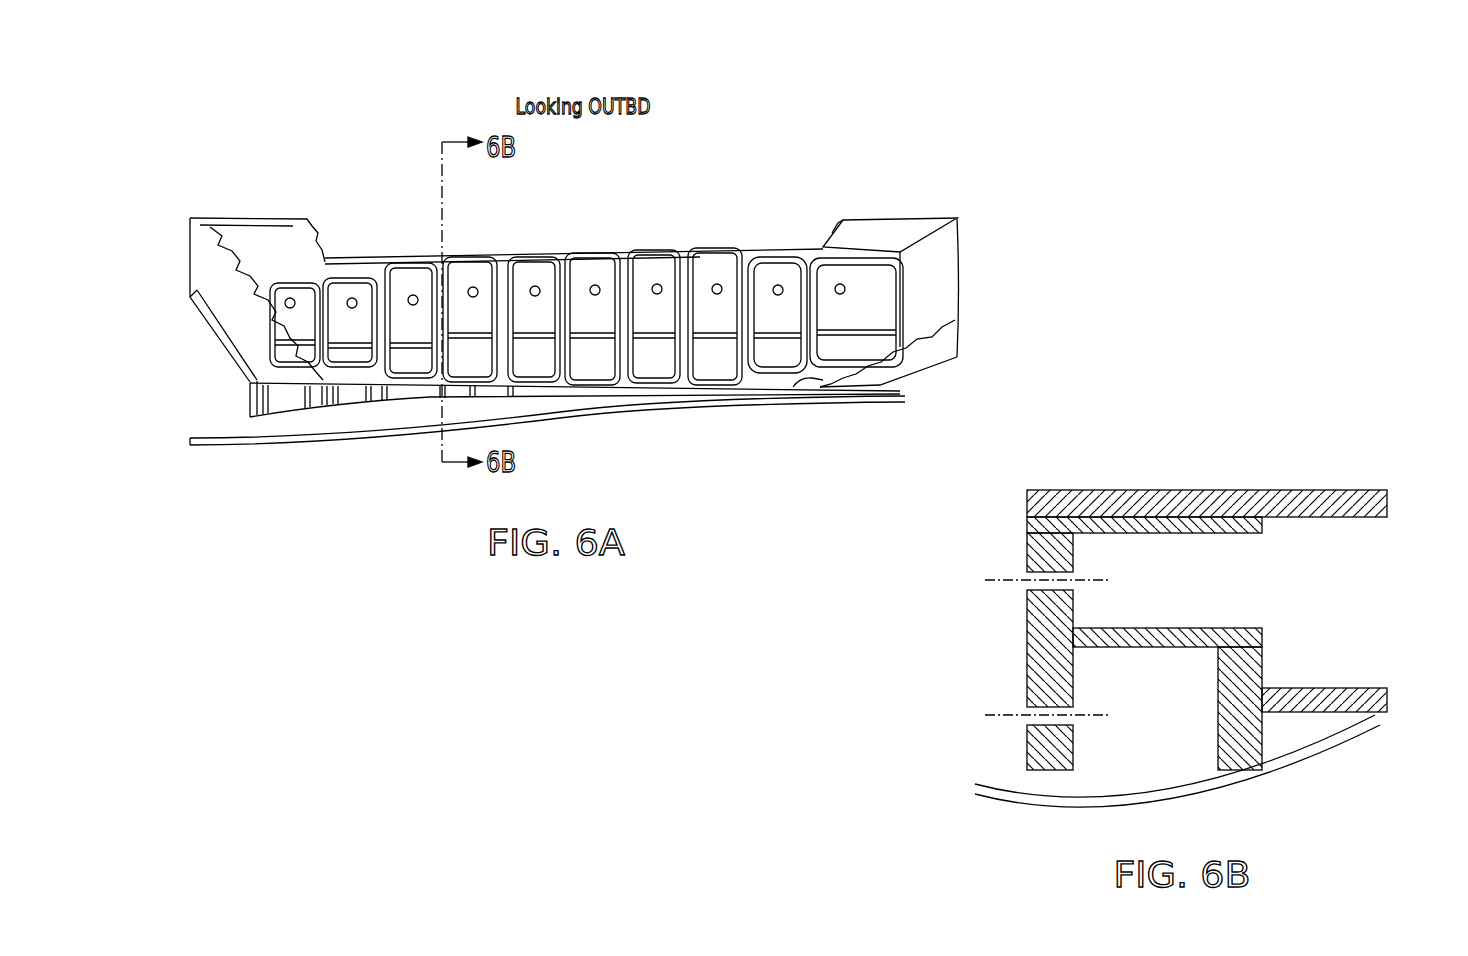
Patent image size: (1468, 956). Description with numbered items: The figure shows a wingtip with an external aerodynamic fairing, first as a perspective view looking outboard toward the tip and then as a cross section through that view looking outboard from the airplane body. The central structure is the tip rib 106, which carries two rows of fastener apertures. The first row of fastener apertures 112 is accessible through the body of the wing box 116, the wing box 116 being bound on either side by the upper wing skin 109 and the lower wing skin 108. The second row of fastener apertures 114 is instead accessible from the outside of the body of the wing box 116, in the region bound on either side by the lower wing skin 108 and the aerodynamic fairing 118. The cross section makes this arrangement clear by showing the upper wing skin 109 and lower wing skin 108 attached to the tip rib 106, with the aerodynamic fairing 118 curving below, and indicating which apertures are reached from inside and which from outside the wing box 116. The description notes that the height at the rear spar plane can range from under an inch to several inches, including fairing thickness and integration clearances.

In FIG. 6A, the tip rib 106 is at (374, 328).
In FIG. 6B, the tip rib 106 is at (1023, 641).
In FIG. 6A, the lower wing skin 108 is at (216, 416).
In FIG. 6B, the lower wing skin 108 is at (1369, 675).
In FIG. 6B, the upper wing skin 109 is at (1338, 692).
In FIG. 6A, the first row of fastener apertures 112 is at (283, 300).
In FIG. 6B, the first row of fastener apertures 112 is at (1023, 583).
In FIG. 6B, the second row of fastener apertures 114 is at (1023, 718).
In FIG. 6B, the wing box 116 is at (1317, 637).
In FIG. 6B, the aerodynamic fairing 118 is at (973, 787).